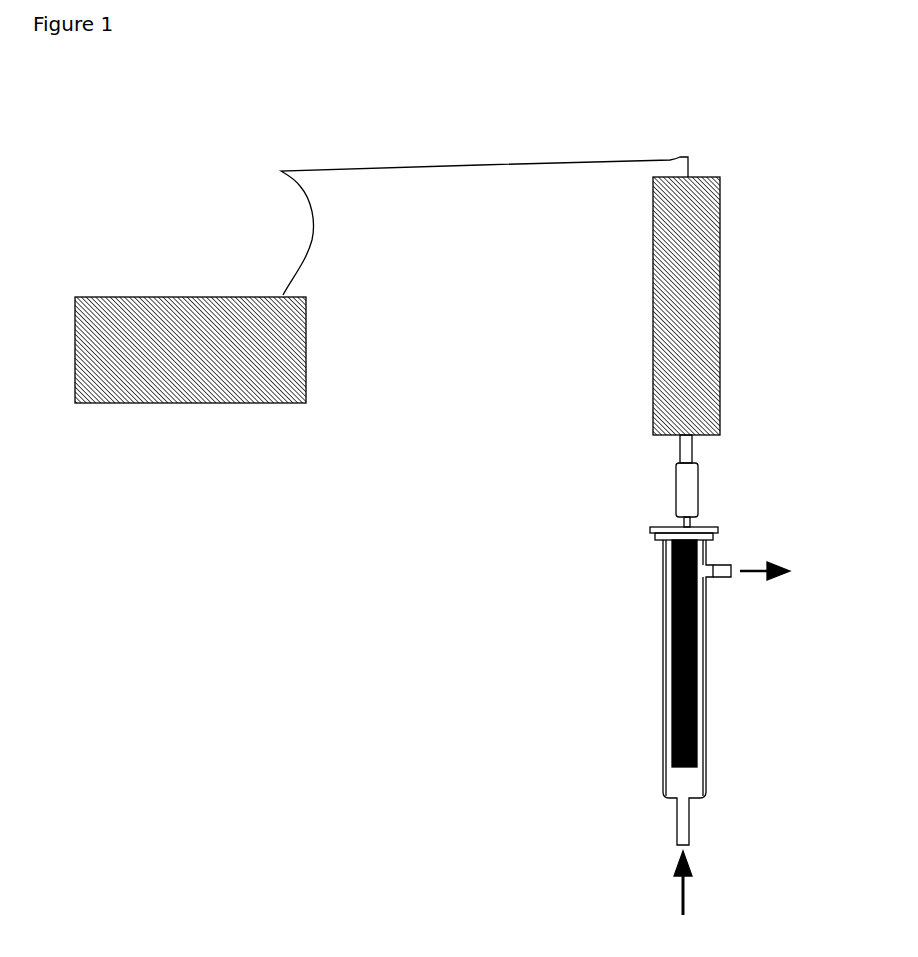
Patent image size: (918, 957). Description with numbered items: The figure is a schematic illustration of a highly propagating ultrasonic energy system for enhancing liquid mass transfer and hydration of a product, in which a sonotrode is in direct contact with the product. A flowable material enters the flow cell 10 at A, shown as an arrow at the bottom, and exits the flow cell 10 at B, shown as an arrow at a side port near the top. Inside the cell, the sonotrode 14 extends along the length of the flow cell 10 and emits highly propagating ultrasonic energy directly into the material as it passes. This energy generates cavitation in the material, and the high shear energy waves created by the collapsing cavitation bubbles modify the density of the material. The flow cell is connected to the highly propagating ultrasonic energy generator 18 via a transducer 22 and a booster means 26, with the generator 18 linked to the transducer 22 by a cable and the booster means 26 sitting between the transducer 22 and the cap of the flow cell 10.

The flow cell 10 is at (706, 778).
The sonotrode 14 is at (665, 680).
The highly propagating ultrasonic energy generator 18 is at (183, 403).
The transducer 22 is at (653, 280).
The booster means 26 is at (676, 486).